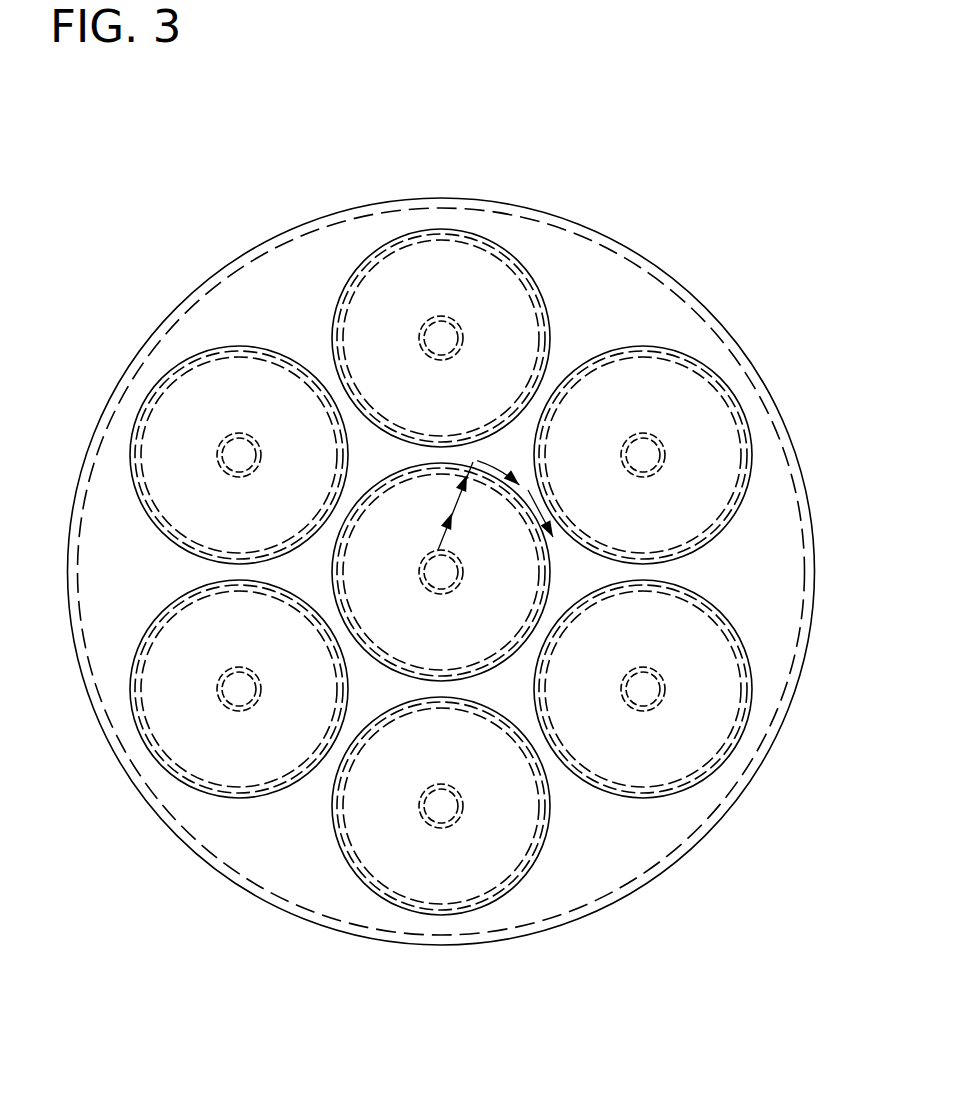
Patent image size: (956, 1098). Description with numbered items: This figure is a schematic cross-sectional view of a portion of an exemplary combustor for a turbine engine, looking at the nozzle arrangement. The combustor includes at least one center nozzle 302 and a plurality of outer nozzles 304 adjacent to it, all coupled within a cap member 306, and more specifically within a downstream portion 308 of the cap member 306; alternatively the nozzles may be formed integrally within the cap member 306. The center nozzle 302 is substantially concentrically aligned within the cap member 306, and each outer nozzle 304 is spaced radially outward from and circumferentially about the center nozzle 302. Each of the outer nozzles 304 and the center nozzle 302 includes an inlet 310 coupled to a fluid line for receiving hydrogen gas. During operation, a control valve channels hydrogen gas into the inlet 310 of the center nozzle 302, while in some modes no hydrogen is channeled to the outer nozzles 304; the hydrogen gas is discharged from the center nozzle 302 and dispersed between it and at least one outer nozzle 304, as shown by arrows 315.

The center nozzle 302 is at (498, 662).
The outer nozzles 304 is at (685, 353).
The cap member 306 is at (442, 198).
The downstream portion 308 is at (530, 260).
The inlet 310 is at (393, 532).
The arrows 315 is at (540, 510).